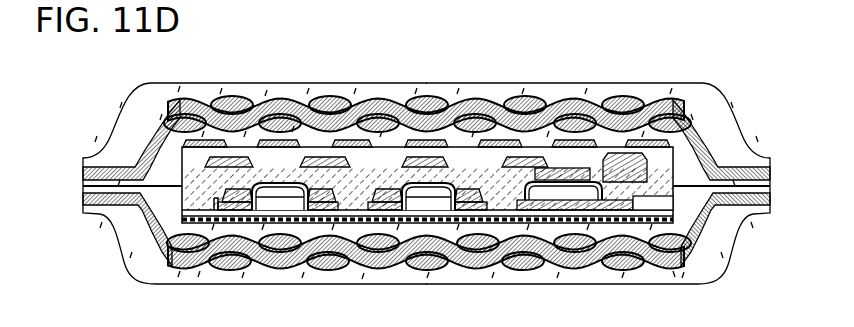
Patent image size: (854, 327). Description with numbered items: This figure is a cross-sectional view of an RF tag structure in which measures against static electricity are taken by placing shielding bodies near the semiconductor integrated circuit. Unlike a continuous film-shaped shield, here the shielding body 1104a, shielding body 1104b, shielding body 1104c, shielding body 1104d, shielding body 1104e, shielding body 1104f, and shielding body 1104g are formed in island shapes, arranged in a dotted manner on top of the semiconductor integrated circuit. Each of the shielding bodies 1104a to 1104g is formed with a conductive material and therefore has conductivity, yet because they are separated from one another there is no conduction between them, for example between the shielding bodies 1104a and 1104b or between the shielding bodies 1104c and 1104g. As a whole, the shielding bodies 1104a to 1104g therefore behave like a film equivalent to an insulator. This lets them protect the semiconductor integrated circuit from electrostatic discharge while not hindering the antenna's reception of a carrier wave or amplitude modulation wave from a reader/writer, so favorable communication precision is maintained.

The shielding body 1104a is at (205, 135).
The shielding body 1104b is at (278, 135).
The shielding body 1104c is at (352, 135).
The shielding body 1104d is at (427, 135).
The shielding body 1104e is at (500, 135).
The shielding body 1104f is at (575, 135).
The shielding body 1104g is at (647, 135).